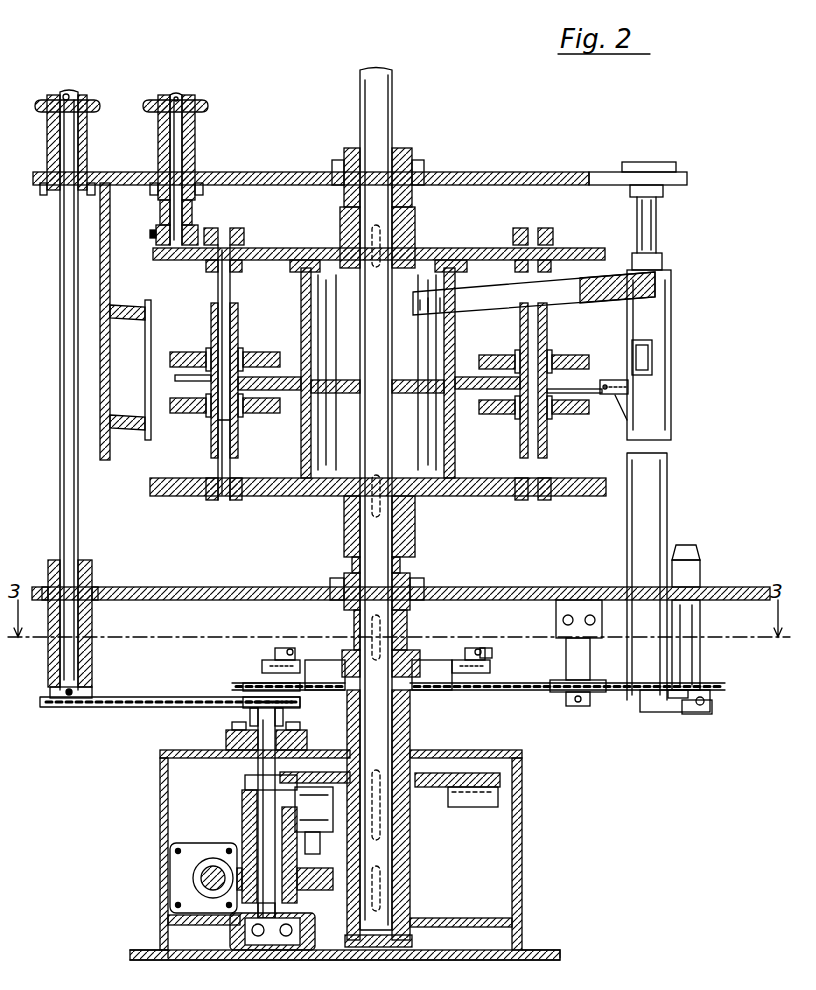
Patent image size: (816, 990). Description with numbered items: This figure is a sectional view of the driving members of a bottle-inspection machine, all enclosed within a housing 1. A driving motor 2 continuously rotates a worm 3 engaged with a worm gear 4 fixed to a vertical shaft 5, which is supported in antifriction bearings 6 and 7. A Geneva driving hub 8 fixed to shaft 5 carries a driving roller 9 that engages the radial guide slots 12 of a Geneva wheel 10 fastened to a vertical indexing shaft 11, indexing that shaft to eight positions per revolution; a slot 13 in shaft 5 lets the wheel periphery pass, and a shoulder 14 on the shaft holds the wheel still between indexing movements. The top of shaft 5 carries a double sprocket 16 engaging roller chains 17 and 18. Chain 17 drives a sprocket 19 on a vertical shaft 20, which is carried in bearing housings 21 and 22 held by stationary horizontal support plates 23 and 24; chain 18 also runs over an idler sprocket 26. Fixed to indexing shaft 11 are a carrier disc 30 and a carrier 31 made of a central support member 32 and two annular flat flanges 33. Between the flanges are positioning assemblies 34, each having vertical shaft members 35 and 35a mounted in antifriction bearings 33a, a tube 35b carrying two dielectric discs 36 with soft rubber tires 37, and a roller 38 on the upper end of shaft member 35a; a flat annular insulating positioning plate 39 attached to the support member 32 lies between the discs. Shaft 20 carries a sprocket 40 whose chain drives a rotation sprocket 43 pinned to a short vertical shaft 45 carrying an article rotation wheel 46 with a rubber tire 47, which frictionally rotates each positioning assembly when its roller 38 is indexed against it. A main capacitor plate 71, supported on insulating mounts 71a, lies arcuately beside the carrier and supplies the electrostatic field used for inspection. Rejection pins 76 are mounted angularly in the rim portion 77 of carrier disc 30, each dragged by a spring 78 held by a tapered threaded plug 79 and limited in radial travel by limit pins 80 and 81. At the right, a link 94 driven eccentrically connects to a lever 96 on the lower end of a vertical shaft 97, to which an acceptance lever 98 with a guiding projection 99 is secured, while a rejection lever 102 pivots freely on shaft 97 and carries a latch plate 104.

The housing 1 is at (522, 827).
The driving motor 2 is at (170, 890).
The worm 3 is at (193, 876).
The worm gear 4 is at (333, 875).
The vertical shaft 5 is at (275, 910).
The antifriction bearing 6 is at (258, 746).
The antifriction bearing 7 is at (230, 935).
The Geneva driving hub 8 is at (242, 838).
The driving roller 9 is at (258, 805).
The Geneva wheel 10 is at (483, 807).
The vertical indexing shaft 11 is at (392, 110).
The radial guide slots 12 is at (455, 787).
The slot 13 is at (282, 815).
The shoulder 14 is at (245, 782).
The double sprocket 16 is at (300, 708).
The roller chain 17 is at (178, 695).
The roller chain 18 is at (490, 692).
The sprocket 19 is at (92, 690).
The vertical shaft 20 is at (60, 388).
The bearing housing 21 is at (92, 618).
The bearing housing 22 is at (87, 137).
The support plate 23 is at (238, 586).
The support plate 24 is at (545, 171).
The idler sprocket 26 is at (598, 678).
The carrier disc 30 is at (407, 630).
The carrier 31 is at (312, 490).
The central support member 32 is at (301, 305).
The annular flat flanges 33 is at (333, 247).
The antifriction bearings 33a is at (208, 264).
The positioning assembly 34 is at (238, 330).
The vertical shaft member 35 is at (218, 463).
The vertical shaft member 35a is at (232, 286).
The tube 35b is at (238, 437).
The discs 36 is at (270, 352).
The soft rubber tire 37 is at (178, 352).
The roller 38 is at (244, 236).
The insulating positioning plate 39 is at (283, 377).
The sprocket 40 is at (95, 105).
The rotation sprocket 43 is at (205, 108).
The short vertical shaft 45 is at (180, 94).
The article rotation wheel 46 is at (196, 224).
The rubber tire 47 is at (150, 236).
The main capacitor plate 71 is at (151, 318).
The insulating mounts 71a is at (128, 320).
The rejection pins 76 is at (262, 667).
The rim portion 77 is at (492, 658).
The spring 78 is at (275, 655).
The tapered threaded plug 79 is at (290, 648).
The limit pin 80 is at (262, 680).
The limit pin 81 is at (342, 675).
The link 94 is at (698, 714).
The lever 96 is at (627, 400).
The vertical shaft 97 is at (656, 232).
The acceptance lever 98 is at (606, 410).
The projection 99 is at (625, 425).
The rejection lever 102 is at (575, 280).
The latch plate 104 is at (632, 352).